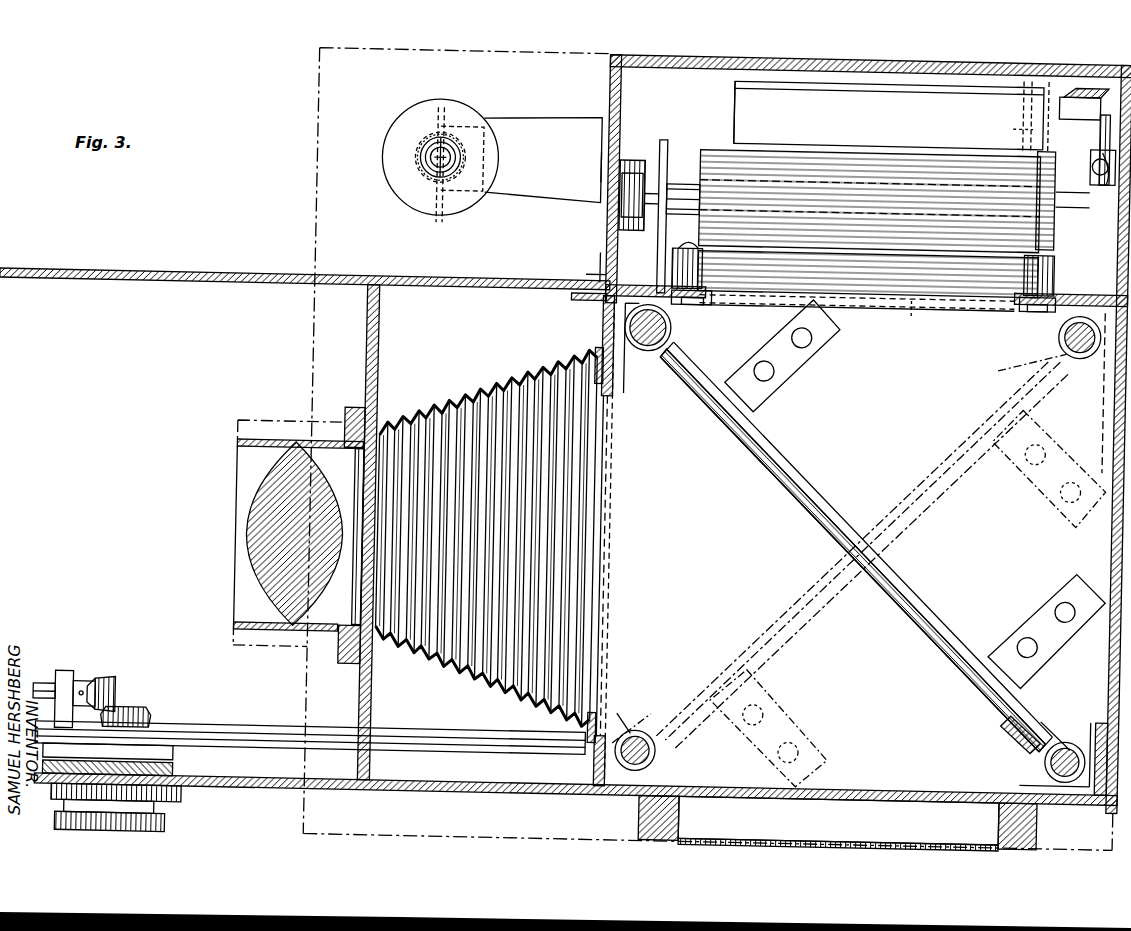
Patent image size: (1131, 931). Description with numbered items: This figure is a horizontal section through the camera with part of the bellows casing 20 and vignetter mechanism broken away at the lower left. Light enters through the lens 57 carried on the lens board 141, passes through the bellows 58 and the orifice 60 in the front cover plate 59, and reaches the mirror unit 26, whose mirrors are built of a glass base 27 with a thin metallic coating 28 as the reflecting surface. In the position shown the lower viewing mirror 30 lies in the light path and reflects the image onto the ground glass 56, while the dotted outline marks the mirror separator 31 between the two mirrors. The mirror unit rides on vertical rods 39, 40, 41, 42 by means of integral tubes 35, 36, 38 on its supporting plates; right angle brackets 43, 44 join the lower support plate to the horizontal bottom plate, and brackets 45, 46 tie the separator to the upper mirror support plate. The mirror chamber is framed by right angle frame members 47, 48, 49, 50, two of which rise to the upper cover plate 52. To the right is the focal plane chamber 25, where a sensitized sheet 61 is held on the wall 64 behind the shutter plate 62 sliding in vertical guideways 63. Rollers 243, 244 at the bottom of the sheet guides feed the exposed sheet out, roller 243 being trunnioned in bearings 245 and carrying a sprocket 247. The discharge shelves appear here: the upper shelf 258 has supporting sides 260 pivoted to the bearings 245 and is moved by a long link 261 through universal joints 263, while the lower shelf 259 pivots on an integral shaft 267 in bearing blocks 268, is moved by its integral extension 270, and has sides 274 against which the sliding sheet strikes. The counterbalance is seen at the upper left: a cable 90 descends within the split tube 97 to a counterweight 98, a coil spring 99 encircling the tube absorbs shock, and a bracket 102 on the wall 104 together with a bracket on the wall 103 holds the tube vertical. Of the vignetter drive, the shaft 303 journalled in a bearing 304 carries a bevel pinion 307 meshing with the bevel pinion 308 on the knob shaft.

The bellows casing 20 is at (142, 268).
The focal plane chamber 25 is at (606, 100).
The mirror unit 26 is at (880, 513).
The glass base 27 is at (915, 590).
The metallic coating 28 is at (960, 585).
The viewing mirror 30 is at (1012, 698).
The mirror separator 31 is at (617, 435).
The vertical tube 35 is at (640, 700).
The vertical tube 36 is at (1031, 361).
The vertical tube 38 is at (1090, 730).
The vertical rod 39 is at (658, 737).
The vertical rod 40 is at (1081, 336).
The vertical rod 41 is at (649, 332).
The vertical rod 42 is at (1058, 743).
The right angle bracket 43 is at (790, 360).
The right angle bracket 44 is at (1042, 595).
The right angle bracket 45 is at (1040, 470).
The right angle bracket 46 is at (758, 685).
The right angle frame member 47 is at (628, 700).
The right angle frame member 48 is at (1106, 350).
The right angle frame member 49 is at (626, 375).
The right angle frame member 50 is at (1040, 762).
The upper cover plate 52 is at (744, 770).
The ground glass 56 is at (868, 824).
The lens 57 is at (262, 543).
The bellows 58 is at (474, 380).
The front cover plate 59 is at (598, 332).
The orifice 60 is at (612, 580).
The sensitized sheet 61 is at (960, 290).
The shutter plate 62 is at (912, 300).
The vertical guideway 63 is at (710, 290).
The wall 64 is at (590, 264).
The cable 90 is at (434, 140).
The split tube 97 is at (450, 140).
The counterweight 98 is at (405, 190).
The coil spring 99 is at (418, 150).
The bracket 102 is at (550, 190).
The wall 103 is at (315, 215).
The wall 104 is at (600, 248).
The lens board 141 is at (368, 328).
The roller 243 is at (900, 150).
The roller 244 is at (878, 282).
The bearing 245 is at (668, 140).
The sprocket 247 is at (606, 205).
The upper shelf 258 is at (665, 140).
The lower shelf 259 is at (731, 70).
The supporting side 260 is at (632, 147).
The long link 261 is at (1104, 162).
The universal joint 263 is at (1088, 145).
The integral shaft 267 is at (1002, 129).
The bearing block 268 is at (1015, 75).
The integral extension 270 is at (1097, 97).
The side 274 is at (855, 73).
The shaft 303 is at (52, 682).
The bearing 304 is at (72, 669).
The bevel pinion 307 is at (118, 674).
The bevel pinion 308 is at (140, 704).